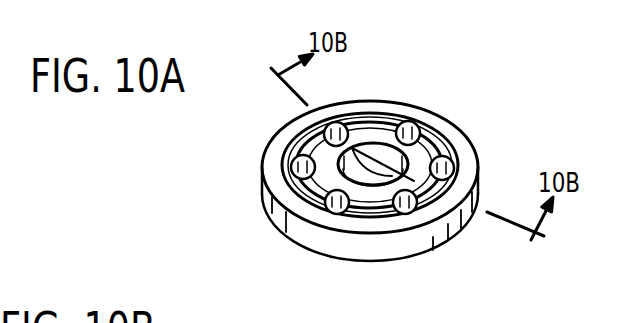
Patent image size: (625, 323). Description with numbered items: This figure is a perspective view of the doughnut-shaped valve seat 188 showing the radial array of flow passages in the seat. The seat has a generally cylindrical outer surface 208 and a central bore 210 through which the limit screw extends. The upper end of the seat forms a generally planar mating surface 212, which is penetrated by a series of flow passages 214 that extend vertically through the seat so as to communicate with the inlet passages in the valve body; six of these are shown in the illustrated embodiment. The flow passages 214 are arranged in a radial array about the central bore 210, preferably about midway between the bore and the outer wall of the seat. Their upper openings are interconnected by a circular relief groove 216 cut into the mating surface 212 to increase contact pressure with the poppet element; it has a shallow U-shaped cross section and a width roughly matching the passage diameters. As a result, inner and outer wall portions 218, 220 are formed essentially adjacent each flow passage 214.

The valve seat 188 is at (400, 100).
The outer surface 208 is at (296, 221).
The central bore 210 is at (303, 137).
The mating surface 212 is at (270, 154).
The flow passages 214 is at (413, 112).
The relief groove 216 is at (302, 178).
The inner wall portion 218 is at (378, 197).
The outer wall portion 220 is at (365, 227).